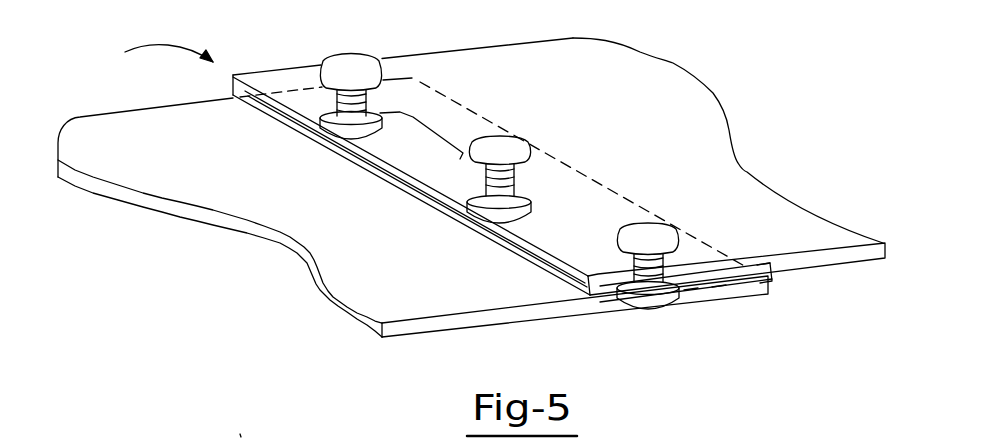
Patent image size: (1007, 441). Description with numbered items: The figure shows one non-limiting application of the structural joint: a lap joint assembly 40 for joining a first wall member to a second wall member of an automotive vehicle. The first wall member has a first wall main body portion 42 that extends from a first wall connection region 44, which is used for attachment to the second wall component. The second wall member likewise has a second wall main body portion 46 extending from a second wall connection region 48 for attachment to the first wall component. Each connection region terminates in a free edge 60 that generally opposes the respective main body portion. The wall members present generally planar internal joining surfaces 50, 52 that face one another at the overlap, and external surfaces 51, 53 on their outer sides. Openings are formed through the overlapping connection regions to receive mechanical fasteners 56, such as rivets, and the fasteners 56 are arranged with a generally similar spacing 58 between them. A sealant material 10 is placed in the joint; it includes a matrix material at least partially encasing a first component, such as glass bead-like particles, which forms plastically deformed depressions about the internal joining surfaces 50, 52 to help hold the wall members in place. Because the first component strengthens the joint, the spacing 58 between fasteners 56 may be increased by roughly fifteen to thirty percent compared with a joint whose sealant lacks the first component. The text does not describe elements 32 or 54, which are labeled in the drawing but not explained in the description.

The sealant material 10 is at (758, 283).
The sheet reference 32 is at (240, 423).
The lap joint assembly 40 is at (156, 53).
The first wall main body portion 42 is at (590, 67).
The first wall connection region 44 is at (590, 200).
The second wall main body portion 46 is at (153, 140).
The second wall connection region 48 is at (597, 310).
The internal joining surface 50 is at (718, 287).
The external surface 51 is at (668, 134).
The internal joining surface 52 is at (691, 287).
The external surface 53 is at (453, 322).
The nut 54 is at (320, 128).
The mechanical fastener 56 is at (347, 63).
The spacing 58 is at (432, 132).
The free edge 60 is at (388, 172).